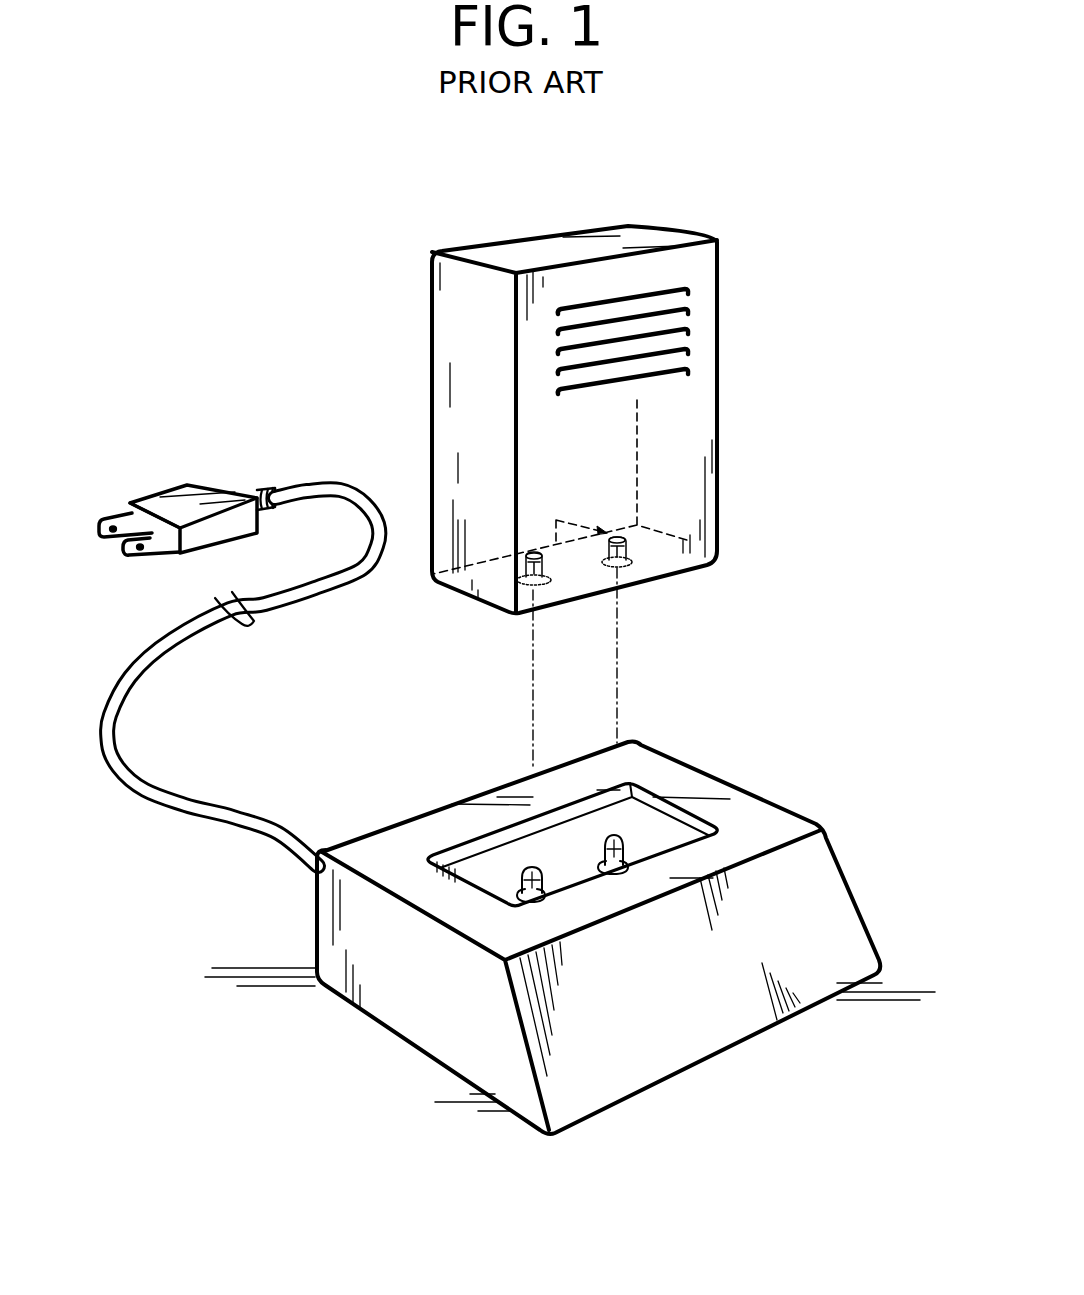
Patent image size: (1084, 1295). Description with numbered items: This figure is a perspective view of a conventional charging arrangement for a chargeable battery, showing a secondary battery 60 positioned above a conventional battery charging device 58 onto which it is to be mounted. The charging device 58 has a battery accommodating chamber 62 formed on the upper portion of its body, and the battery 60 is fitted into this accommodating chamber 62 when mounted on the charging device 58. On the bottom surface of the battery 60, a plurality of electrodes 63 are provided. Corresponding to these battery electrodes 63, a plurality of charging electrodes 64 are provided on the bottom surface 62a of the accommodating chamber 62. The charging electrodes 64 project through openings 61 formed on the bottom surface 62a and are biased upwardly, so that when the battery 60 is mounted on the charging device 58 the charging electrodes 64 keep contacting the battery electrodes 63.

The battery charging device 58 is at (647, 764).
The secondary battery 60 is at (719, 392).
The openings 61 is at (550, 894).
The battery accommodating chamber 62 is at (678, 833).
The bottom surface 62a is at (481, 877).
The electrodes 63 is at (556, 520).
The charging electrodes 64 is at (538, 867).